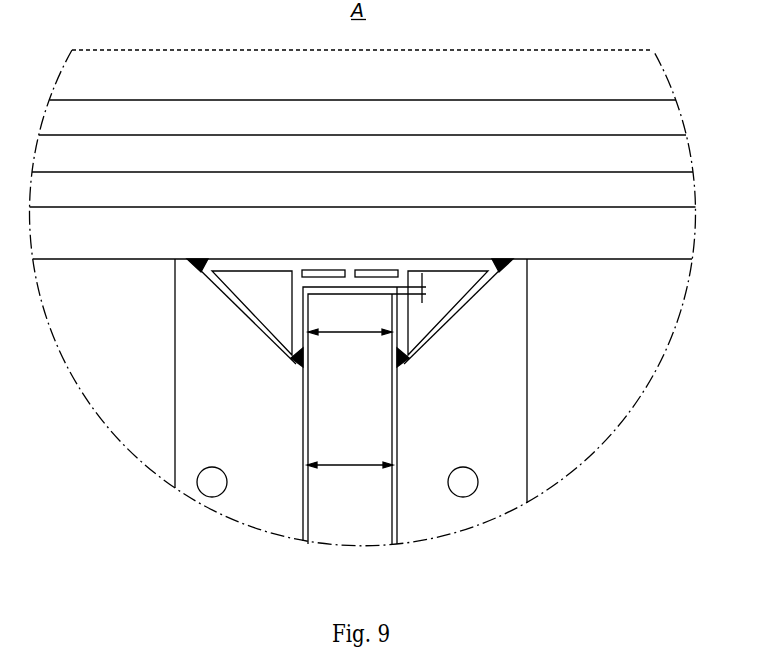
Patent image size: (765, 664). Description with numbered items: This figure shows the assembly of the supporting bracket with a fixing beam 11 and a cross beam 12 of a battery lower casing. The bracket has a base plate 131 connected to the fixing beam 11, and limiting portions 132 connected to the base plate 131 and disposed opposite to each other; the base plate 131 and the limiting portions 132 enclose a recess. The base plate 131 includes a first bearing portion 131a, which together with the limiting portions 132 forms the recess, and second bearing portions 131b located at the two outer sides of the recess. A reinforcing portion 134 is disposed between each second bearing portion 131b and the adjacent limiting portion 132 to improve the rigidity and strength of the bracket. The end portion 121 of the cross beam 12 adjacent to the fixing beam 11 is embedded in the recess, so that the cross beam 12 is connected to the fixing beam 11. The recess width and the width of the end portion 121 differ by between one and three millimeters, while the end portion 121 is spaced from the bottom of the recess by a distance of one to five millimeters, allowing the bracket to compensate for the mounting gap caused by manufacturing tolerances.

The fixing beam 11 is at (157, 252).
The cross beam 12 is at (335, 520).
The end portion 121 is at (393, 375).
The base plate 131 is at (347, 378).
The first bearing portion 131a is at (362, 266).
The second bearing portion 131b is at (270, 268).
The limiting portion 132 is at (297, 318).
The reinforcing portion 134 is at (222, 296).